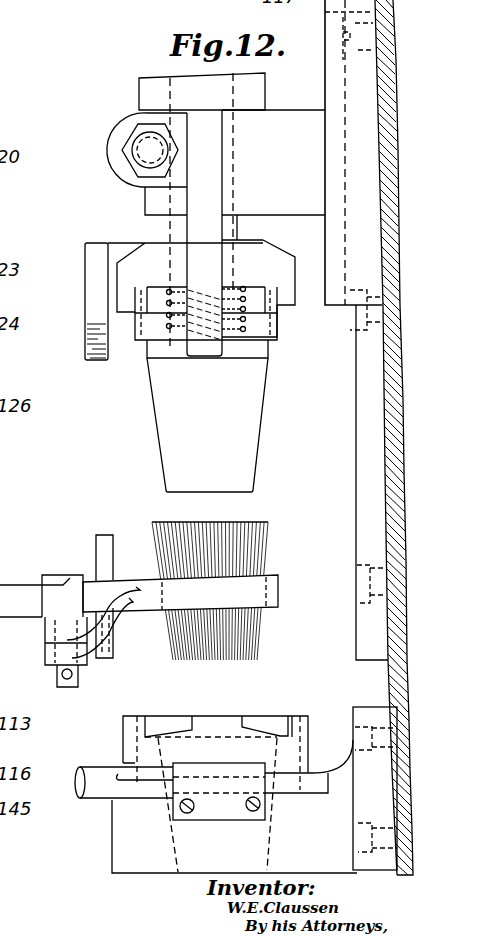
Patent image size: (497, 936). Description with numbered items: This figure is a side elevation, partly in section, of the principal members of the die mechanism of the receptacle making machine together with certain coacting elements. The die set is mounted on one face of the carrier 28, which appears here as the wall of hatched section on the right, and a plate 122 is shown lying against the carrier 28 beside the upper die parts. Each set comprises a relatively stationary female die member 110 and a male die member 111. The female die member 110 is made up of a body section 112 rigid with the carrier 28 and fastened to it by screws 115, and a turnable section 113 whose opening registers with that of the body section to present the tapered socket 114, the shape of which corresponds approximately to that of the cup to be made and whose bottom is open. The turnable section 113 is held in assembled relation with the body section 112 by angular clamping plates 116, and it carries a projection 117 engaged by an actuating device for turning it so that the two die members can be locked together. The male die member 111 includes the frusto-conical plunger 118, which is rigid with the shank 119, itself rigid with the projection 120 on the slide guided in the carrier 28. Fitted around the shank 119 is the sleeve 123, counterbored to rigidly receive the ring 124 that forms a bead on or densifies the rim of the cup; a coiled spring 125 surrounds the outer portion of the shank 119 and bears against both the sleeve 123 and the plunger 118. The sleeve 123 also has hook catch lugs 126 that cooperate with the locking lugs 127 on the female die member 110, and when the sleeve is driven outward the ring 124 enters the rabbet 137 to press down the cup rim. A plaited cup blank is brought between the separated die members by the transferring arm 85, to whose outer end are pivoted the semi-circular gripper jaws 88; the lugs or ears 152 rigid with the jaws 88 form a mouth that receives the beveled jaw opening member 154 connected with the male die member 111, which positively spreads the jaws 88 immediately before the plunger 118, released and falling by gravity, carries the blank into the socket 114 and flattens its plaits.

The carrier 28 is at (387, 422).
The transferring arm 85 is at (3, 595).
The gripper jaws 88 is at (258, 590).
The female die member 110 is at (191, 753).
The male die member 111 is at (270, 298).
The body section 112 is at (234, 836).
The turnable section 113 is at (310, 723).
The tapered socket 114 is at (173, 840).
The screws 115 is at (382, 827).
The clamping plates 116 is at (219, 792).
The projection 117 is at (102, 788).
The plunger 118 is at (207, 425).
The shank 119 is at (237, 228).
The projection 120 is at (232, 211).
The wall plate 122 is at (365, 488).
The sleeve 123 is at (185, 277).
The ring 124 is at (137, 330).
The coiled spring 125 is at (168, 328).
The hook catch lugs 126 is at (210, 352).
The locking lugs 127 is at (257, 720).
The rabbet 137 is at (143, 730).
The lugs or ears 152 is at (103, 550).
The jaw opening member 154 is at (88, 344).